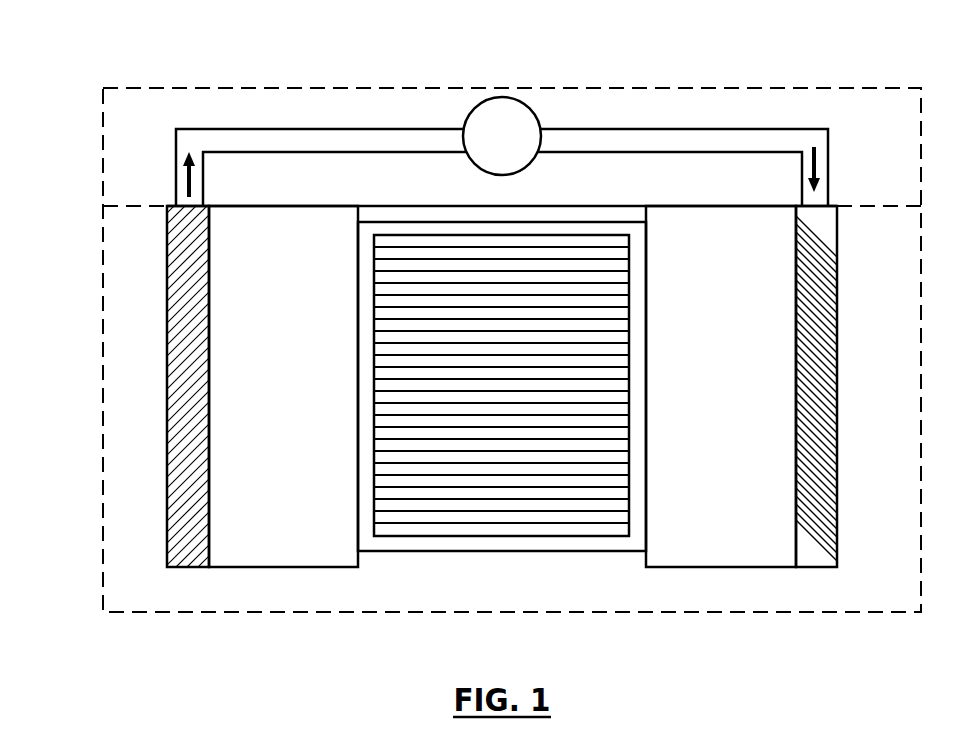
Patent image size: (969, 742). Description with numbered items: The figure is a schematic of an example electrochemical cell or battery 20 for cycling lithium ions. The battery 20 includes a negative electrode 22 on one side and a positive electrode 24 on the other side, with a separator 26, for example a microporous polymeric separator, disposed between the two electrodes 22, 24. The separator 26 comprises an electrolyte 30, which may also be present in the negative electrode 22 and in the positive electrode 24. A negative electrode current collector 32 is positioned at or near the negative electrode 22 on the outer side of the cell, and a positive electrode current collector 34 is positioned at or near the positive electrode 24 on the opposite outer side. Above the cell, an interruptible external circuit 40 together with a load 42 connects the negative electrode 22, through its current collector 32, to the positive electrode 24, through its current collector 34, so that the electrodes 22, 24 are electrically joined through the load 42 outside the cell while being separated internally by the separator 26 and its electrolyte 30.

The battery 20 is at (95, 278).
The negative electrode 22 is at (290, 354).
The positive electrode 24 is at (730, 352).
The separator 26 is at (502, 552).
The electrolyte 30 is at (491, 383).
The negative electrode current collector 32 is at (166, 285).
The positive electrode current collector 34 is at (838, 280).
The interruptible external circuit 40 is at (266, 82).
The load 42 is at (502, 151).